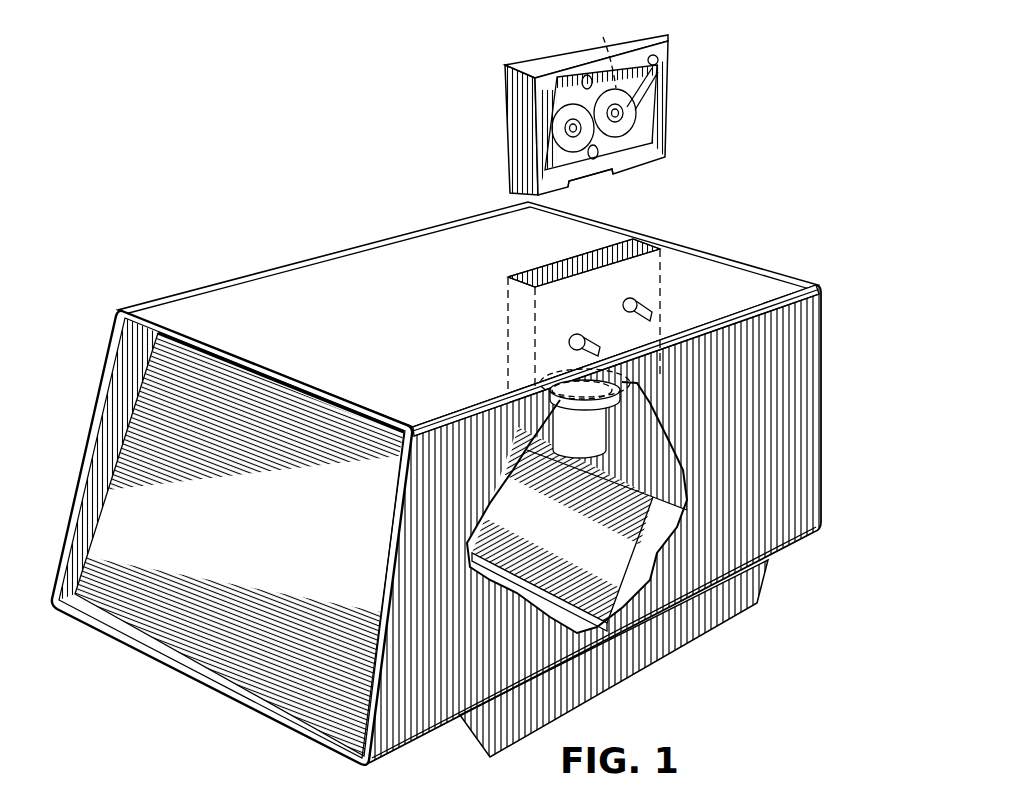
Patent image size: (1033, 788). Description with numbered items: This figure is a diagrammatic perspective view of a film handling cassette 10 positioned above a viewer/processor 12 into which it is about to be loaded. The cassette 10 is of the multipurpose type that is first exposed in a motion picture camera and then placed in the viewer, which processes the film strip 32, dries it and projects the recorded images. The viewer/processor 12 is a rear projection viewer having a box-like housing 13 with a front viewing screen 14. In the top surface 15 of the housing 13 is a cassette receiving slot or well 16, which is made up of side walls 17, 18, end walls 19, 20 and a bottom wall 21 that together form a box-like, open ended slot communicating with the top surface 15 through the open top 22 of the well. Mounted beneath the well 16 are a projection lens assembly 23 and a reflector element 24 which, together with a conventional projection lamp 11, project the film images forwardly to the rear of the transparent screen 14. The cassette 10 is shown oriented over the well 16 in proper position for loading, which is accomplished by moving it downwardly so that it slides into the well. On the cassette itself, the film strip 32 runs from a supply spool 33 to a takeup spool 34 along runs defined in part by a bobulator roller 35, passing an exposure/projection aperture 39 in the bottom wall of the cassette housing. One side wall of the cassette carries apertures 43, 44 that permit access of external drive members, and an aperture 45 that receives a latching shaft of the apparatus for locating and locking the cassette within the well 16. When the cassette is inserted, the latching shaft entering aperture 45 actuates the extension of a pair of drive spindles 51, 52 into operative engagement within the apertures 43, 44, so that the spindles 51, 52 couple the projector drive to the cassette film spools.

The film handling cassette 10 is at (588, 103).
The projection lamp 11 is at (584, 485).
The viewer/processor 12 is at (436, 489).
The housing 13 is at (395, 742).
The front viewing screen 14 is at (118, 465).
The top surface 15 is at (185, 300).
The cassette receiving slot or well 16 is at (633, 238).
The side wall 17 is at (562, 262).
The side wall 18 is at (563, 272).
The end wall 19 is at (527, 271).
The end wall 20 is at (660, 241).
The bottom wall 21 is at (548, 401).
The open top 22 is at (625, 240).
The projection lens assembly 23 is at (578, 455).
The reflector element 24 is at (646, 548).
The film strip 32 is at (660, 101).
The supply spool 33 is at (601, 52).
The takeup spool 34 is at (536, 123).
The bobulator roller 35 is at (660, 61).
The exposure/projection aperture 39 is at (600, 171).
The aperture 43 is at (619, 116).
The aperture 44 is at (565, 135).
The aperture 45 is at (578, 83).
The drive spindle 51 is at (626, 311).
The drive spindle 52 is at (570, 343).